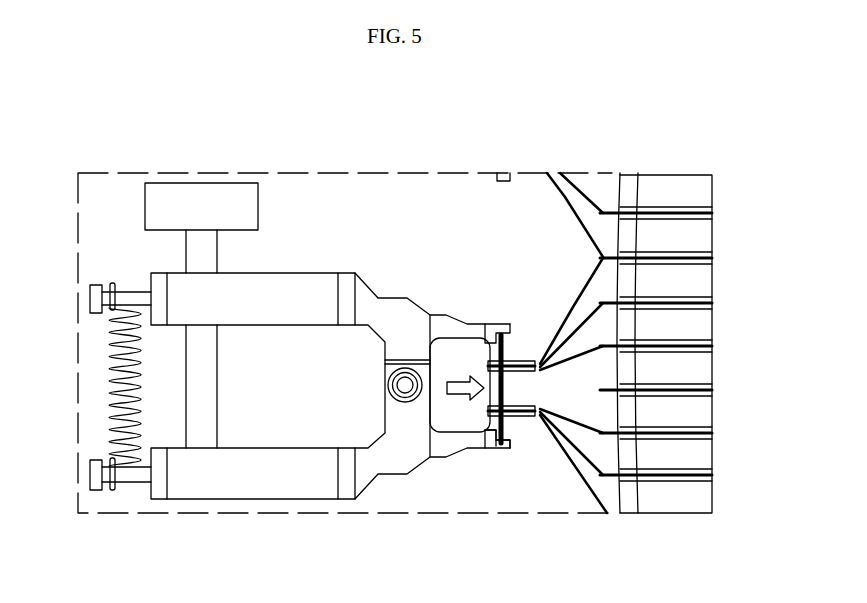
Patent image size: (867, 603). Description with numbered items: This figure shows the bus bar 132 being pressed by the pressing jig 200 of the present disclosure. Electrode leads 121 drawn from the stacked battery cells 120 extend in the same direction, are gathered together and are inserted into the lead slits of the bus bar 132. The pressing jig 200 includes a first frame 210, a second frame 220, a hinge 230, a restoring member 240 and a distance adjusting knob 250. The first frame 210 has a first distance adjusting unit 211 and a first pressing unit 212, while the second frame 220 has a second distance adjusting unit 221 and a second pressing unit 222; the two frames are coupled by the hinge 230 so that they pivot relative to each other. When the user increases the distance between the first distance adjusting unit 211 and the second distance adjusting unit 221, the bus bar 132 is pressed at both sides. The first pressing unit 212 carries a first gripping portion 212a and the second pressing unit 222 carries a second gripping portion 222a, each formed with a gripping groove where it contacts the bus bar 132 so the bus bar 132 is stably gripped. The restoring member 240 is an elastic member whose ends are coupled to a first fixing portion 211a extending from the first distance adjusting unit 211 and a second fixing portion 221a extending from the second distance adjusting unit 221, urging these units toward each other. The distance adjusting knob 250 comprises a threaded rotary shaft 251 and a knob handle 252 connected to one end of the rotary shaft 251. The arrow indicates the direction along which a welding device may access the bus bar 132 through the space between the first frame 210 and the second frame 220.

The pressing jig 200 is at (103, 193).
The distance adjusting knob 250 is at (219, 265).
The rotary shaft 251 is at (203, 250).
The knob handle 252 is at (192, 193).
The second frame 220 is at (334, 291).
The second distance adjusting unit 221 is at (333, 270).
The second fixing portion 221a is at (133, 293).
The second pressing unit 222 is at (447, 318).
The second gripping portion 222a is at (503, 330).
The first frame 210 is at (365, 516).
The first distance adjusting unit 211 is at (268, 500).
The first fixing portion 211a is at (132, 477).
The first pressing unit 212 is at (443, 458).
The first gripping portion 212a is at (500, 442).
The restoring member 240 is at (108, 386).
The hinge 230 is at (390, 385).
The electrode lead 121 is at (508, 360).
The bus bar 132 is at (493, 495).
The battery cell 120 is at (698, 196).